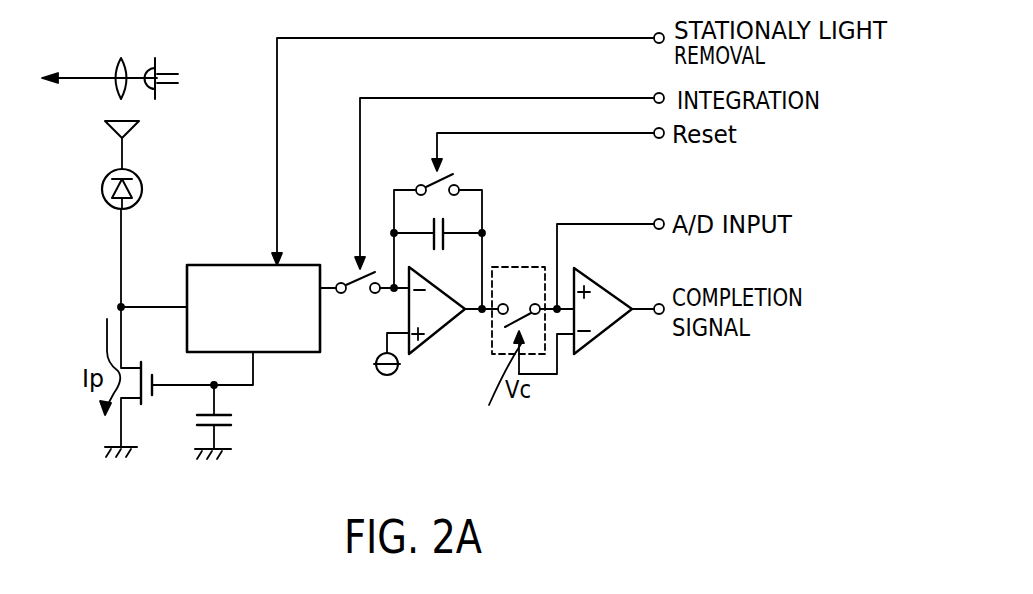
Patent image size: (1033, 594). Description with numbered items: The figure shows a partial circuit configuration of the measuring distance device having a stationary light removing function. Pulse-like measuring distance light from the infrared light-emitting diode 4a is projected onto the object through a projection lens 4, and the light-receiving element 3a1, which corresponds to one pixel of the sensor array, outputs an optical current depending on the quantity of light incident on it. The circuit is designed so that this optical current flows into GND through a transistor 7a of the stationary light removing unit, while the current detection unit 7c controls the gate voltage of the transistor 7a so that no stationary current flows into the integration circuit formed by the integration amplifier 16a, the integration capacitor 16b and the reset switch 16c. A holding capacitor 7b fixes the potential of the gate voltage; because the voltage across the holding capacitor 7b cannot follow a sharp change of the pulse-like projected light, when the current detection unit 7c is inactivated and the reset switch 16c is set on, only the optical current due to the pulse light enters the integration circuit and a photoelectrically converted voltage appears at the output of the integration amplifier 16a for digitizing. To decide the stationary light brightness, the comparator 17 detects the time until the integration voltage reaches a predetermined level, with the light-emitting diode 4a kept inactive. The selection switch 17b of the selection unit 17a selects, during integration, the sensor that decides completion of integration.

The projection lens 4 is at (110, 55).
The infrared light-emitting diode 4a is at (153, 57).
The light-receiving element 3a1 is at (100, 172).
The transistor 7a is at (147, 402).
The holding capacitor 7b is at (229, 420).
The current detection unit 7c is at (297, 352).
The integration amplifier 16a is at (445, 330).
The integration capacitor 16b is at (437, 249).
The reset switch 16c is at (459, 183).
The comparator 17 is at (613, 318).
The selection unit 17a is at (522, 265).
The selection switch 17b is at (582, 371).